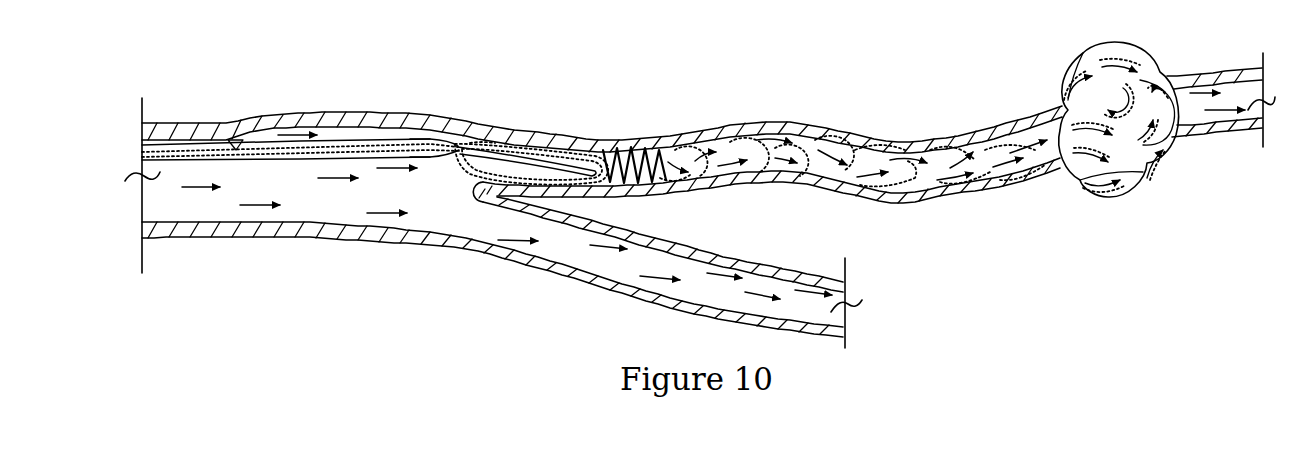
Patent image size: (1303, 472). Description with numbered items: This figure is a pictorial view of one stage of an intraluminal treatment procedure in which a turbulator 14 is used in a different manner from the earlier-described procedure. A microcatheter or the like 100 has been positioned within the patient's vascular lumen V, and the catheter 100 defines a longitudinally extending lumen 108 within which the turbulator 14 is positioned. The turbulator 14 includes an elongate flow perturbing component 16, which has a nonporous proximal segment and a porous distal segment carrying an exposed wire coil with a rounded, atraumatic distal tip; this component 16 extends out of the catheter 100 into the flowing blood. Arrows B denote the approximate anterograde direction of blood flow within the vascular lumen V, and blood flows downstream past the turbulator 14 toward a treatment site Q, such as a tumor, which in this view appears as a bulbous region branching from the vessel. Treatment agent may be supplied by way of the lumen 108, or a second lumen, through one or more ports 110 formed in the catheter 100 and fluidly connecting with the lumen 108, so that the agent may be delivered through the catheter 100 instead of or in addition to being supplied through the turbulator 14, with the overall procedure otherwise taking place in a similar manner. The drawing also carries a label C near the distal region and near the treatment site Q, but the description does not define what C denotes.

The microcatheter 100 is at (228, 148).
The ports 110 is at (453, 143).
The longitudinally extending lumen 108 is at (420, 158).
The elongate flow perturbing component 16 is at (535, 160).
The turbulator 14 is at (570, 151).
The arrows denoting direction of blood flow B is at (343, 177).
The clot C is at (482, 142).
The vascular lumen V is at (224, 233).
The treatment site Q is at (1174, 147).